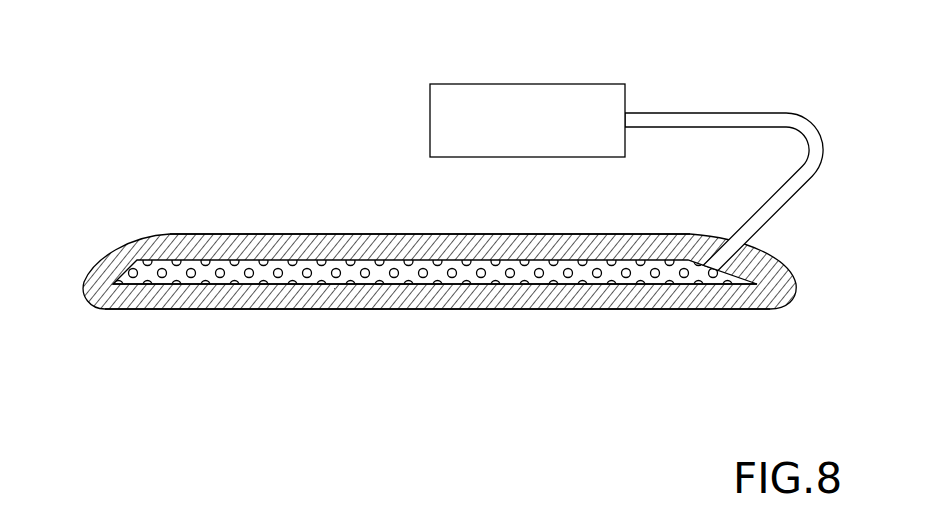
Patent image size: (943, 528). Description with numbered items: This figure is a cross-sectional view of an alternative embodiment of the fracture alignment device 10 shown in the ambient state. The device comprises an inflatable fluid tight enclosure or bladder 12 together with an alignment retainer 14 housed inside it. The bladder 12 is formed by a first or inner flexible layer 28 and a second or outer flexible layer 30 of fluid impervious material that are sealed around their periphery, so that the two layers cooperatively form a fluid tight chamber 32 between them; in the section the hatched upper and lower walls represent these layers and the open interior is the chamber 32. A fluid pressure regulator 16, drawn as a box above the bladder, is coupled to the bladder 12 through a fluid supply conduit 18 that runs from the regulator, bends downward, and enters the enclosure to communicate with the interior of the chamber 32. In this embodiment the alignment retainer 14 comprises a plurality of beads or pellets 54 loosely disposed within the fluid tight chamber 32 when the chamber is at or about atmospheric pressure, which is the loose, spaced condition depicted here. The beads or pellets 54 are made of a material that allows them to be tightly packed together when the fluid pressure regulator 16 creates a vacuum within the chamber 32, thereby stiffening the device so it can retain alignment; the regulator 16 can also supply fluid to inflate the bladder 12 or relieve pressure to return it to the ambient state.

The fracture alignment device 10 is at (430, 257).
The inflatable fluid tight enclosure or bladder 12 is at (657, 331).
The alignment retainer 14 is at (584, 277).
The fluid pressure regulator 16 is at (411, 92).
The fluid supply conduit 18 is at (813, 168).
The first or inner flexible layer 28 is at (303, 310).
The second or outer flexible layer 30 is at (268, 233).
The fluid tight chamber 32 is at (220, 285).
The beads or pellets 54 is at (357, 253).